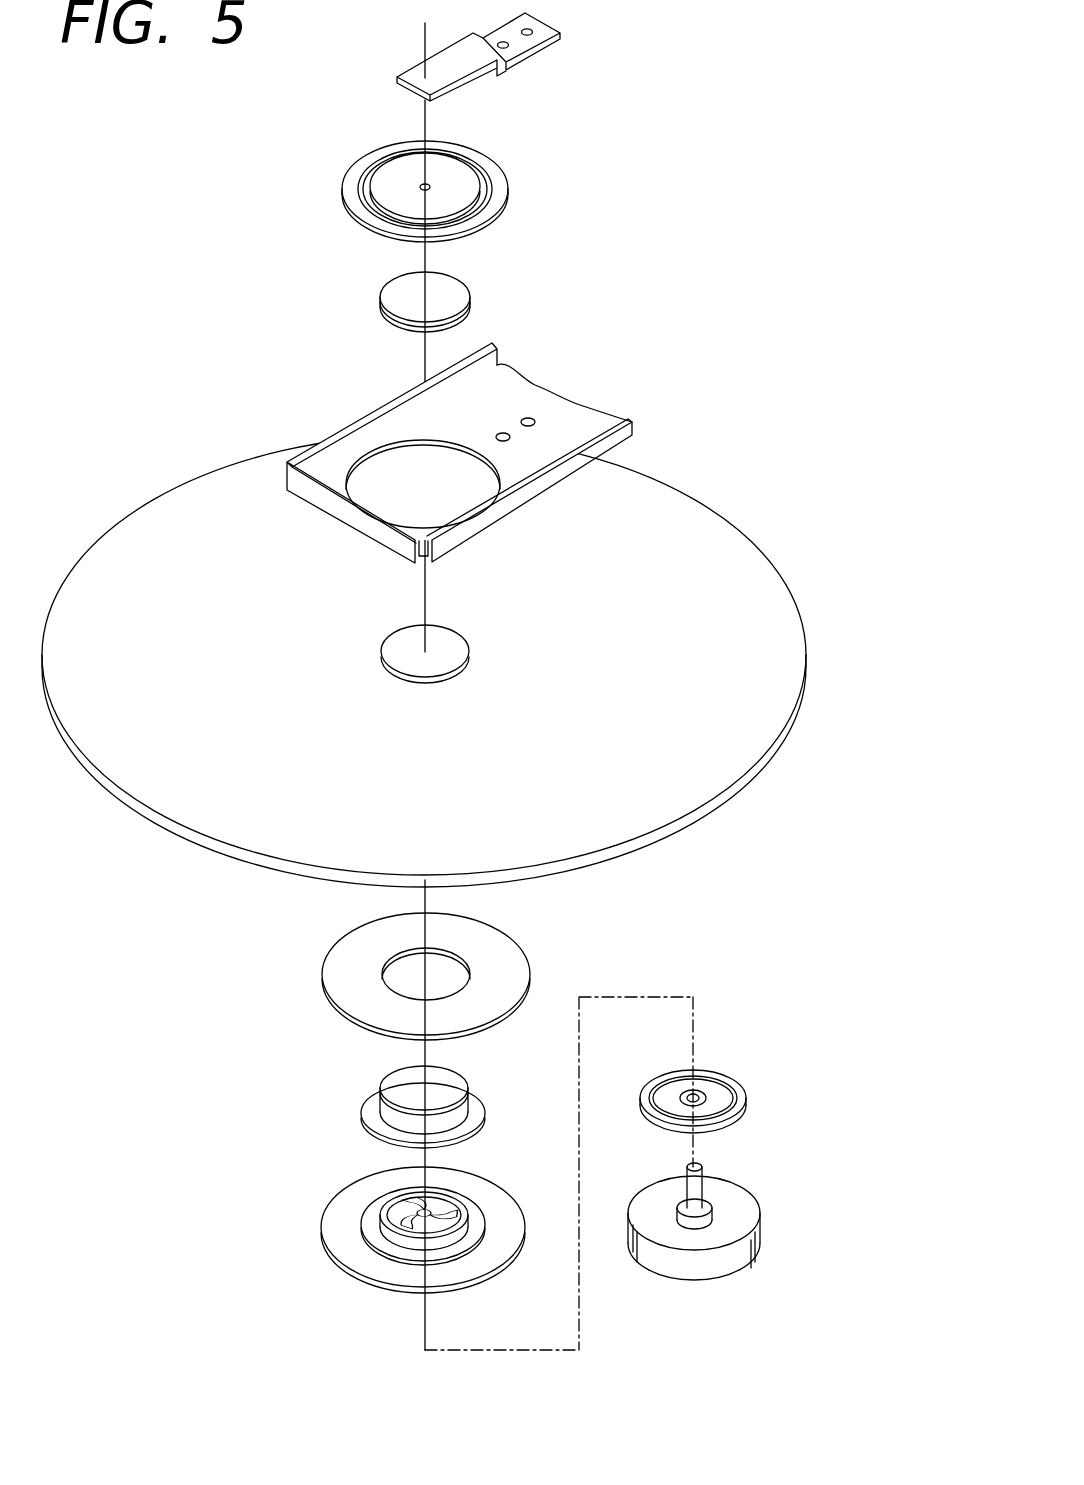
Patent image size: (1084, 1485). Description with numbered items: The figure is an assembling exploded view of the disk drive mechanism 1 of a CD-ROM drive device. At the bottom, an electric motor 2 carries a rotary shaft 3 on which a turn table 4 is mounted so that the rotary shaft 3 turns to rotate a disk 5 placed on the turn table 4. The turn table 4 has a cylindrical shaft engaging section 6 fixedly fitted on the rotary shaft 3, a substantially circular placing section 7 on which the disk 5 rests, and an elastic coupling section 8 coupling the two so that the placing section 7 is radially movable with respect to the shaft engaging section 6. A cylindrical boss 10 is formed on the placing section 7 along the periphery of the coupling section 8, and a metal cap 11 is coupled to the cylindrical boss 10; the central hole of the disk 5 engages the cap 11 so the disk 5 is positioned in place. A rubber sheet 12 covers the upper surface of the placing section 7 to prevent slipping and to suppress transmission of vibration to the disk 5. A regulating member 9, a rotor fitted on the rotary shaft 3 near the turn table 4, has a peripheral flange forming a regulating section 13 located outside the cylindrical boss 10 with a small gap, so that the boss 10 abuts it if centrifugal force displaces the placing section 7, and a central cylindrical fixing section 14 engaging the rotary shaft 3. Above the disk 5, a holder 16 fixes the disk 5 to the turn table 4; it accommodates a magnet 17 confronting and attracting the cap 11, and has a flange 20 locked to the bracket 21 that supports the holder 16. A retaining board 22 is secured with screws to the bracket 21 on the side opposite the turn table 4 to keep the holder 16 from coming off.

The disk drive mechanism 1 is at (766, 376).
The electric motor 2 is at (737, 1260).
The rotary shaft 3 is at (703, 1190).
The turn table 4 is at (327, 1244).
The disk 5 is at (795, 645).
The shaft engaging section 6 is at (432, 1225).
The placing section 7 is at (340, 1247).
The elastic coupling section 8 is at (388, 1213).
The regulating member 9 is at (733, 1178).
The cylindrical boss 10 is at (393, 1243).
The cap 11 is at (390, 1087).
The rubber sheet 12 is at (330, 975).
The regulating section 13 is at (723, 1070).
The cylindrical fixing section 14 is at (685, 1097).
The holder 16 is at (534, 188).
The magnet 17 is at (468, 292).
The flange 20 is at (348, 192).
The bracket 21 is at (533, 467).
The retaining board 22 is at (545, 27).